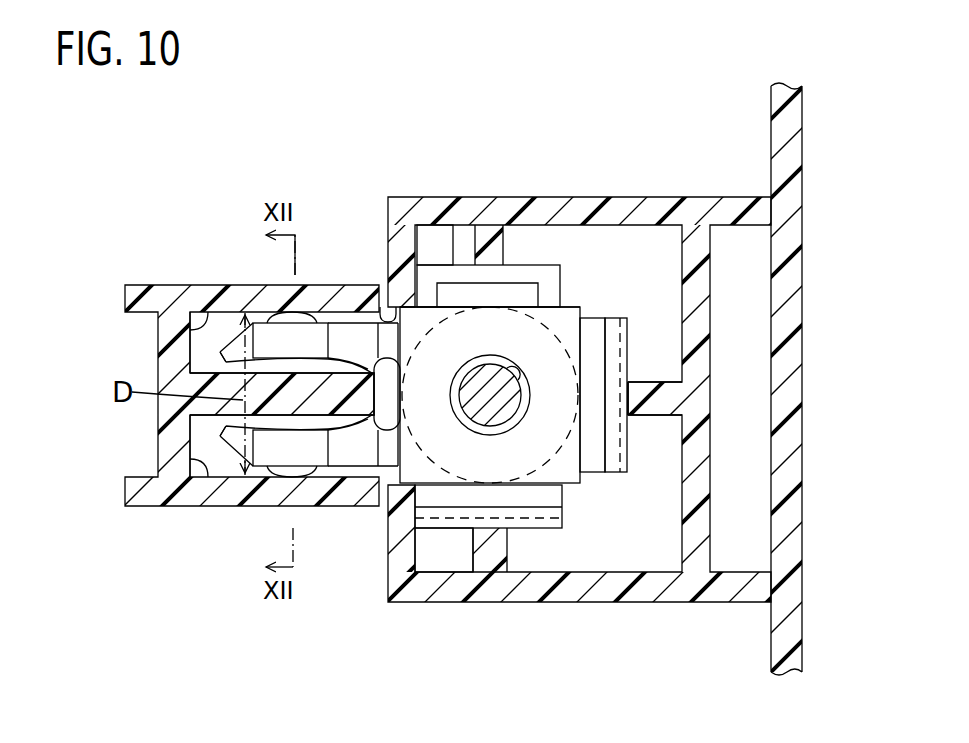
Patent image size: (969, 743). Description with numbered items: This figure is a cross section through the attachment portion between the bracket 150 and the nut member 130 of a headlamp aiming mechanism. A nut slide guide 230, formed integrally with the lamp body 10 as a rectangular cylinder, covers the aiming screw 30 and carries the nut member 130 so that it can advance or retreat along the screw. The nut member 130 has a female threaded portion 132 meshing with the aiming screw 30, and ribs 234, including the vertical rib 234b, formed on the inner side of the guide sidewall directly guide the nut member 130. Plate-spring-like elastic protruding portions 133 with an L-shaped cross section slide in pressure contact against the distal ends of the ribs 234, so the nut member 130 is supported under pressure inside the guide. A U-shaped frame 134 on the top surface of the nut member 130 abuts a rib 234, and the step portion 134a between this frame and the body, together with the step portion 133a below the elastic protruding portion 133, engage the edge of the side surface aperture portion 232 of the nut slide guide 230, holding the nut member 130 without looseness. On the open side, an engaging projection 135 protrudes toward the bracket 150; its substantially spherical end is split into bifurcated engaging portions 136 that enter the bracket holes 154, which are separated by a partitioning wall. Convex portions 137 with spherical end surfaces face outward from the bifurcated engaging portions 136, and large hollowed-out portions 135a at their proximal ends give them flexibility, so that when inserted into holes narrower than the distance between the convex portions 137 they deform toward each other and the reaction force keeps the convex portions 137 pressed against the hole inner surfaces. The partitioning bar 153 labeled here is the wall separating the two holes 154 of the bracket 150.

The lamp body 10 is at (806, 138).
The aiming screw 30 is at (516, 420).
The nut member 130 is at (579, 297).
The female threaded portion 132 is at (513, 373).
The elastic protruding portion 133 is at (447, 530).
The step portion 133a is at (415, 512).
The U-shaped frame 134 is at (455, 262).
The step portion 134a is at (382, 306).
The engaging projection 135 is at (222, 460).
The hollowed-out portion 135a is at (368, 332).
The bifurcated engaging portion 136 is at (264, 338).
The convex portion 137 is at (282, 315).
The bracket 150 is at (173, 281).
The holes 153 is at (291, 405).
The holes 154 is at (190, 328).
The nut slide guide 230 is at (496, 194).
The side surface aperture portion 232 is at (385, 310).
The rib 234 is at (653, 415).
The vertical rib 234b is at (506, 248).